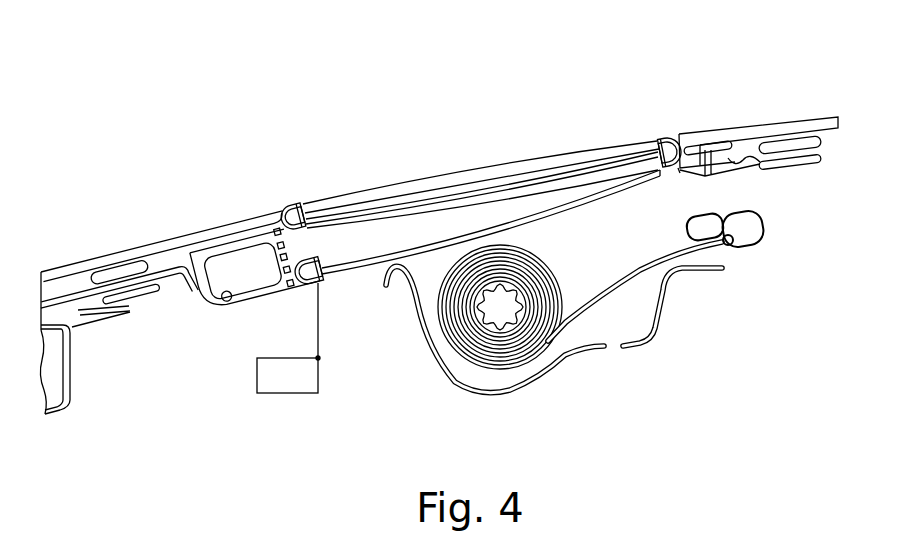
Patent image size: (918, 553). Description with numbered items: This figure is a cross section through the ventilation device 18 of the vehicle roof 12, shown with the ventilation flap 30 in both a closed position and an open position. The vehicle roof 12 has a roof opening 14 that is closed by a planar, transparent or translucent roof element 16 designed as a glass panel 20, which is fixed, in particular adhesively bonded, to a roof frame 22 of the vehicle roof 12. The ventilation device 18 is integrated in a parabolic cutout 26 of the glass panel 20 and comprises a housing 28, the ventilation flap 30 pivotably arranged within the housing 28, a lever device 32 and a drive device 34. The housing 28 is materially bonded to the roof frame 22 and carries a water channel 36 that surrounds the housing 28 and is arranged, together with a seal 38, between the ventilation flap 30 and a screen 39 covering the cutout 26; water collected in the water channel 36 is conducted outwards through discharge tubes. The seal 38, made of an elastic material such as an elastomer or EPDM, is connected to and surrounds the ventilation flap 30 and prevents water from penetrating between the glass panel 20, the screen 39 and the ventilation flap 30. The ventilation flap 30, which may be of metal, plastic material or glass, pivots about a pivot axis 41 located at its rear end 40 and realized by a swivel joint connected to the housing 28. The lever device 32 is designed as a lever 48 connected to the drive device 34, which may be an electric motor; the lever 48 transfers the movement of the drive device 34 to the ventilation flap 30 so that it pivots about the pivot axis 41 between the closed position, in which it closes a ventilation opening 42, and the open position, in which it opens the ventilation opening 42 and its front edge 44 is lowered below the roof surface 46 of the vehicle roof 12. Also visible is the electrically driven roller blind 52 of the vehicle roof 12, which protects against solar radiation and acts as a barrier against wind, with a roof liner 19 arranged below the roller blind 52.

The vehicle roof 12 is at (674, 78).
The roof opening 14 is at (791, 98).
The roof element 16 is at (702, 116).
The ventilation device 18 is at (416, 148).
The roof liner 19 is at (671, 321).
The glass panel 20 is at (836, 118).
The roof frame 22 is at (168, 259).
The cutout 26 is at (281, 191).
The housing 28 is at (205, 291).
The ventilation flap 30 is at (537, 180).
The lever device 32 is at (331, 347).
The drive device 34 is at (285, 385).
The water channel 36 is at (243, 241).
The seal 38 is at (294, 206).
The screen 39 is at (113, 256).
The rear end 40 is at (689, 177).
The pivot axis 41 is at (672, 171).
The ventilation opening 42 is at (320, 228).
The front edge 44 is at (326, 260).
The roof surface 46 is at (205, 216).
The lever 48 is at (320, 317).
The roller blind 52 is at (741, 262).